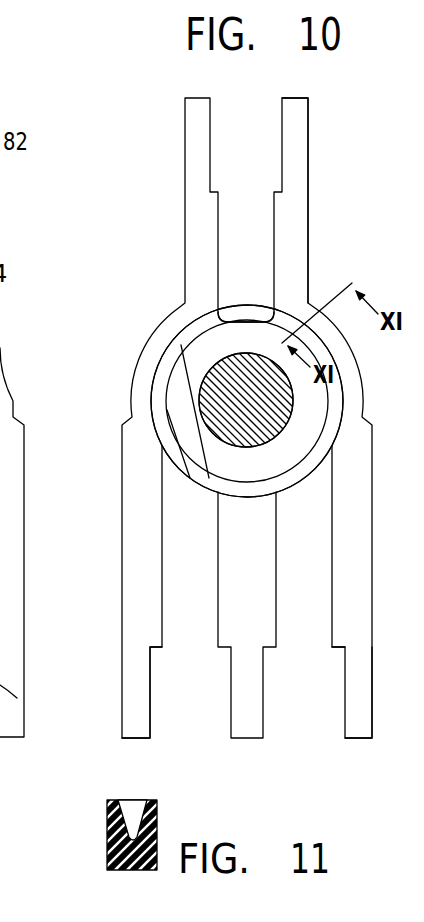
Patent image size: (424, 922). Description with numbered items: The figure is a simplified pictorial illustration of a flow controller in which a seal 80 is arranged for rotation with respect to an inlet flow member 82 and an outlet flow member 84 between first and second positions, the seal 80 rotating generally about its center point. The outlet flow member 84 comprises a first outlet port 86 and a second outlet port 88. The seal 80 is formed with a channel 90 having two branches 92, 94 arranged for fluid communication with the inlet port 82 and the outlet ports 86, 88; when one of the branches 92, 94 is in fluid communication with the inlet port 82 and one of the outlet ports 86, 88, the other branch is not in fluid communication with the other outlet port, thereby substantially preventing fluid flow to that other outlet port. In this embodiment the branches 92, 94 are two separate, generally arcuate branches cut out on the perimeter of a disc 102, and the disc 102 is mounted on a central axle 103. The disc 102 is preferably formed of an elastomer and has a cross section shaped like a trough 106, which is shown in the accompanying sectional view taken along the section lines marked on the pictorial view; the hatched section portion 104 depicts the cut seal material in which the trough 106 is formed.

In FIG. 10, the seal 80 is at (183, 350).
In FIG. 10, the inlet flow member 82 is at (296, 132).
In FIG. 10, the outlet flow member 84 is at (312, 753).
In FIG. 10, the first outlet port 86 is at (127, 693).
In FIG. 10, the second outlet port 88 is at (365, 698).
In FIG. 10, the channel 90 is at (172, 445).
In FIG. 10, the branch 92 is at (236, 320).
In FIG. 10, the branch 94 is at (308, 460).
In FIG. 10, the disc 102 is at (262, 348).
In FIG. 10, the central axle 103 is at (233, 355).
In FIG. 11, the tongue section 104 is at (107, 840).
In FIG. 11, the trough 106 is at (137, 803).